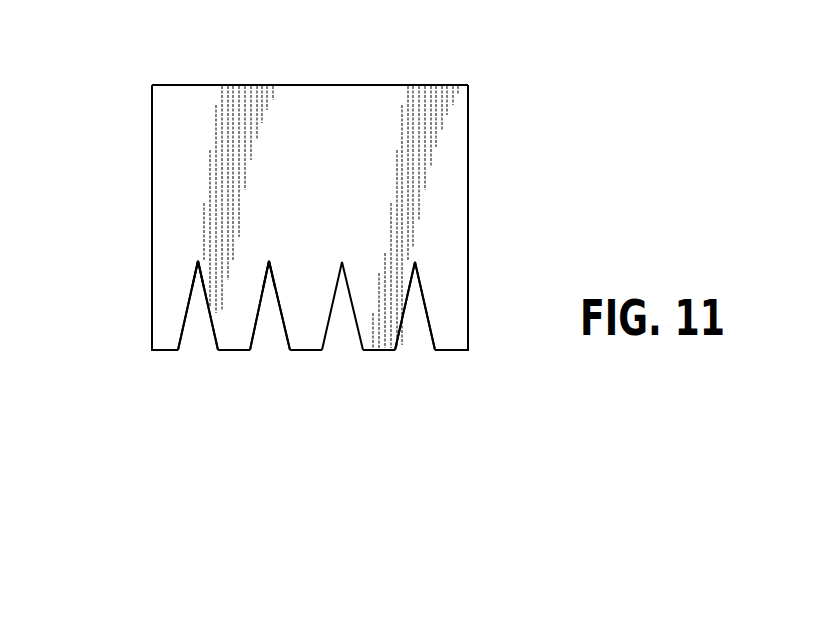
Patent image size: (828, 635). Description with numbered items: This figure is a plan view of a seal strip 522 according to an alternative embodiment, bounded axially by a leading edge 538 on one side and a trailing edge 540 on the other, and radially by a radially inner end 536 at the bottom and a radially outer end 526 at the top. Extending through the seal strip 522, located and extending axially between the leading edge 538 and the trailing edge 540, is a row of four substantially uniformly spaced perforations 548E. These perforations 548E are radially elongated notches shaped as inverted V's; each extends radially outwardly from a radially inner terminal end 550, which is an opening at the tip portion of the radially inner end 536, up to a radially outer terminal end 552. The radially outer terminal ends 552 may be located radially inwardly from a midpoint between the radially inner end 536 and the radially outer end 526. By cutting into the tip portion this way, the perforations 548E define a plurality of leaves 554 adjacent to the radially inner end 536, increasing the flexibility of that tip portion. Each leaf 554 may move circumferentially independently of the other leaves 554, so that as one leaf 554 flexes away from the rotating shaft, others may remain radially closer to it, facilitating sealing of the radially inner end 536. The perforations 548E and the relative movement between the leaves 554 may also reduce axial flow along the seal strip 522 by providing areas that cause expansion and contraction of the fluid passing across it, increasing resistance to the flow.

The seal strip 522 is at (474, 106).
The radially outer end 526 is at (302, 85).
The leading edge 538 is at (152, 156).
The trailing edge 540 is at (468, 208).
The radially inner end 536 is at (165, 352).
The perforations 548E is at (193, 286).
The radially inner terminal ends 550 is at (193, 346).
The radially outer terminal ends 552 is at (198, 260).
The leaves 554 is at (166, 310).